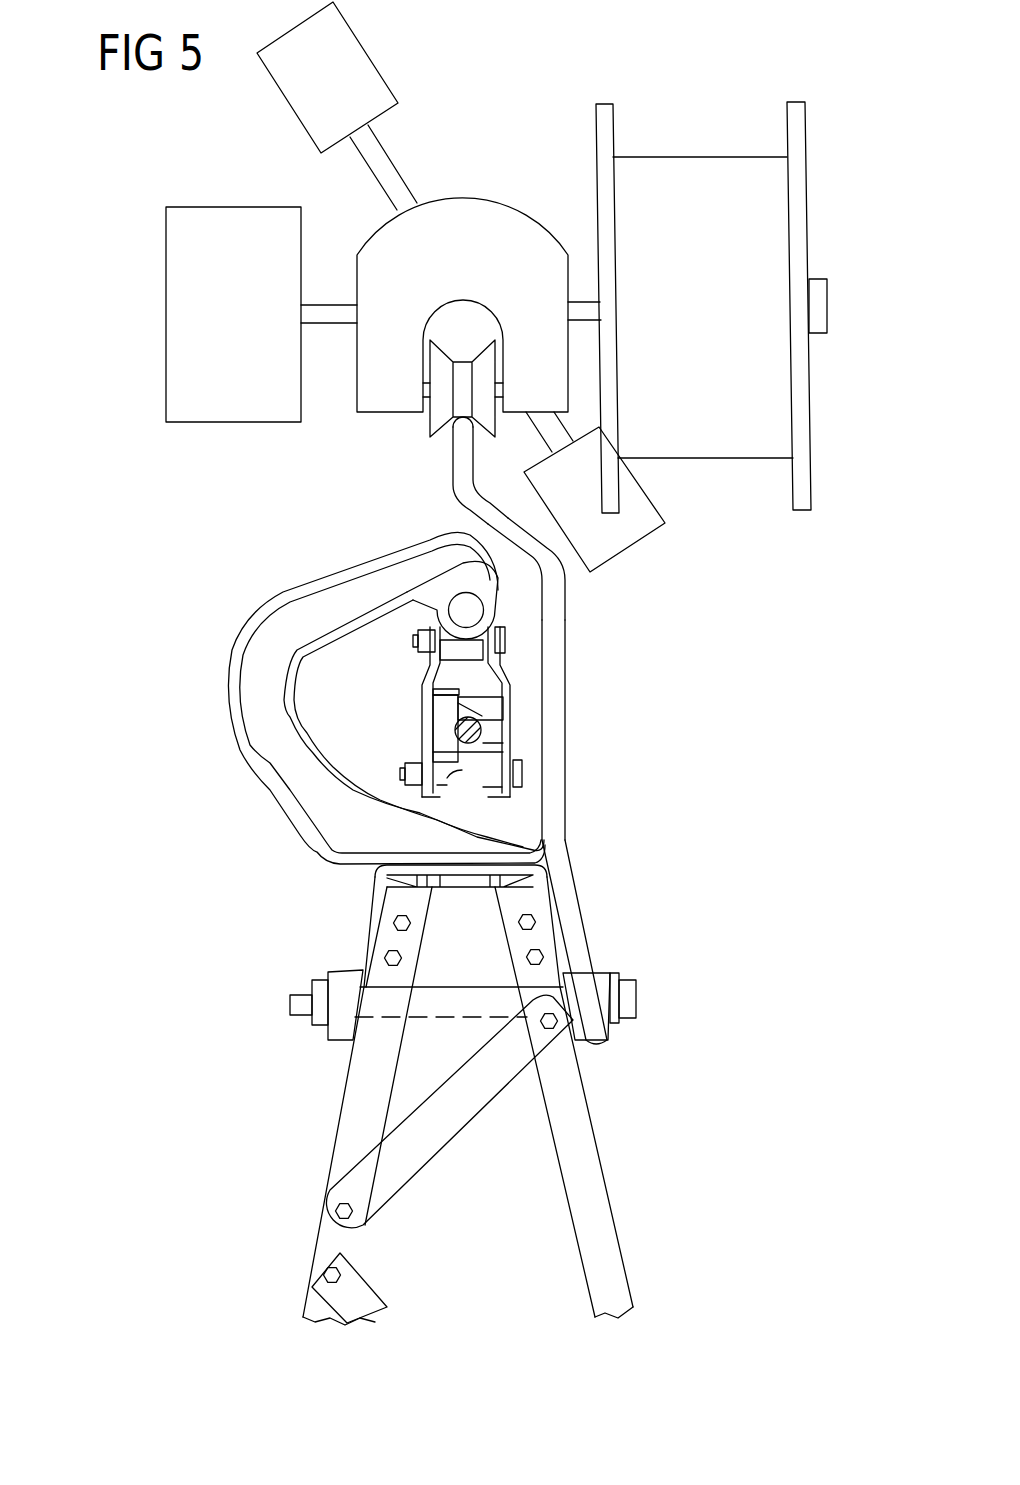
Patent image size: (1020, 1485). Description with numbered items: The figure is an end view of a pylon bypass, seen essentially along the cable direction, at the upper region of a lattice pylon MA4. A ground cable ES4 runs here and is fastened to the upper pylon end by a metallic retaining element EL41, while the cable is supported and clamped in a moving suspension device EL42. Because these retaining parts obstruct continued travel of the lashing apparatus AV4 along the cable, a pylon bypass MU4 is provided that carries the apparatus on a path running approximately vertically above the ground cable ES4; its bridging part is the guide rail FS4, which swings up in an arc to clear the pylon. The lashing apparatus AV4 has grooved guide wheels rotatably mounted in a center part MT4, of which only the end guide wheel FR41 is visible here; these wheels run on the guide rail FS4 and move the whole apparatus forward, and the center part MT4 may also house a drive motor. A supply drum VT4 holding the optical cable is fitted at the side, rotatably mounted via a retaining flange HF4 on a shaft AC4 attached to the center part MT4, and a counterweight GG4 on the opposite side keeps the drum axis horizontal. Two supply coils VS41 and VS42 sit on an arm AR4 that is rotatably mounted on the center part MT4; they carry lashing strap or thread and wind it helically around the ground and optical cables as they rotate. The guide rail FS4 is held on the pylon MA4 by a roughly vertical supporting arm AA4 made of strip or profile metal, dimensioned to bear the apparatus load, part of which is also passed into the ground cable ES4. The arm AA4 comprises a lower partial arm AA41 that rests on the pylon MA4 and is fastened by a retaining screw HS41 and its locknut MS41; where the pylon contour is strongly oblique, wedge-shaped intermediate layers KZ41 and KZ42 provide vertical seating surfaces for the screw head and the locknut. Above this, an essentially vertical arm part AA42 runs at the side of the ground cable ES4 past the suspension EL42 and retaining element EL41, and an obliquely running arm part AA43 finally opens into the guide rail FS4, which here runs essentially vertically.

The supply coil VS41 is at (307, 98).
The arm AR4 is at (377, 167).
The center part MT4 is at (452, 213).
The lashing apparatus AV4 is at (462, 263).
The guide wheel FR41 is at (437, 367).
The shaft AC4 is at (577, 307).
The counterweight GG4 is at (187, 265).
The supply drum VT4 is at (688, 190).
The retaining flange HF4 is at (817, 283).
The supply coil VS42 is at (640, 513).
The guide rail FS4 is at (462, 445).
The pylon bypass MU4 is at (443, 507).
The arm AA4 is at (555, 781).
The arm part AA43 is at (513, 533).
The arm part AA42 is at (557, 750).
The lower partial arm AA41 is at (573, 920).
The retaining element EL41 is at (300, 788).
The suspension device EL42 is at (510, 678).
The ground cable ES4 is at (455, 730).
The pylon MA4 is at (590, 1173).
The intermediate layer KZ42 is at (342, 982).
The locknut MS41 is at (315, 1027).
The intermediate layer KZ41 is at (612, 975).
The retaining screw HS41 is at (640, 998).